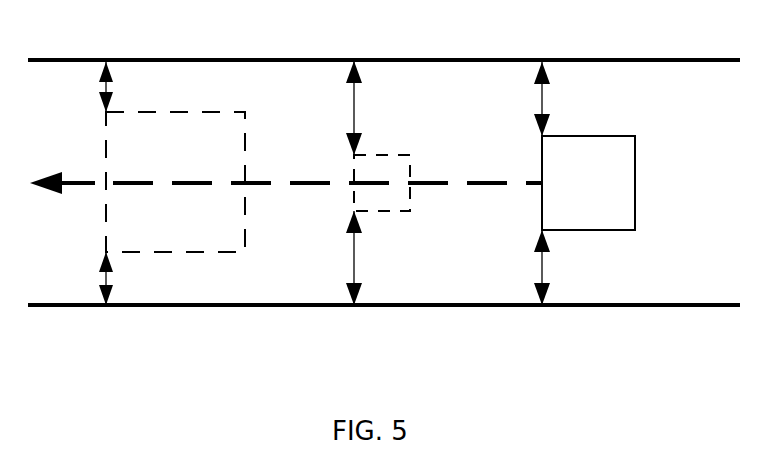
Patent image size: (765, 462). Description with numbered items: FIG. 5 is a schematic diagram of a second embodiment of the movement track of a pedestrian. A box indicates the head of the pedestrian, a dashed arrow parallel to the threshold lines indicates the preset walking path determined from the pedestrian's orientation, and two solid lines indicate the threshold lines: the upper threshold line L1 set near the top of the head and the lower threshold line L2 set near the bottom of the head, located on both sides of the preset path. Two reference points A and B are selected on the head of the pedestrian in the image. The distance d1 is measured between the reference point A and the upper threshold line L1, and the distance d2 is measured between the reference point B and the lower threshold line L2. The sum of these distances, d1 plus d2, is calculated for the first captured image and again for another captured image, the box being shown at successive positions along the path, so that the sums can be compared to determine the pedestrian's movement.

The upper threshold line L1 is at (384, 40).
The lower threshold line L2 is at (384, 327).
The distance between reference point A and upper threshold line d1 is at (527, 99).
The distance between reference point B and lower threshold line d2 is at (528, 267).
The reference point A is at (326, 128).
The reference point B is at (323, 235).